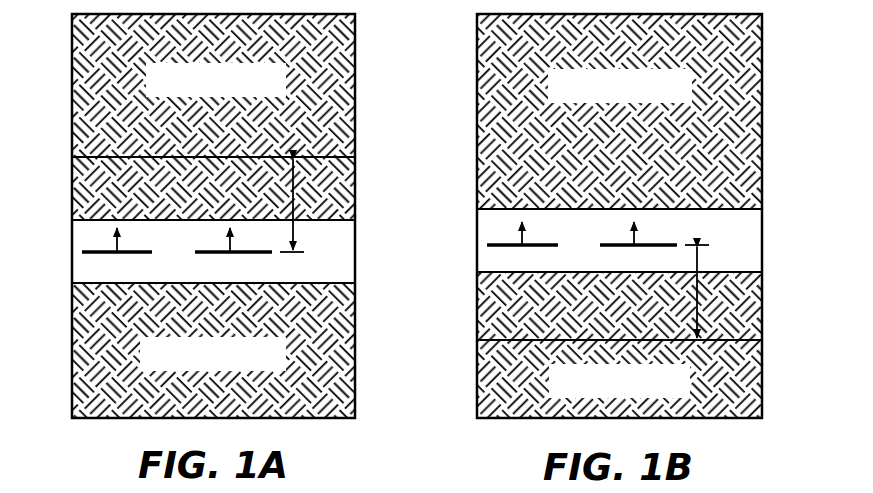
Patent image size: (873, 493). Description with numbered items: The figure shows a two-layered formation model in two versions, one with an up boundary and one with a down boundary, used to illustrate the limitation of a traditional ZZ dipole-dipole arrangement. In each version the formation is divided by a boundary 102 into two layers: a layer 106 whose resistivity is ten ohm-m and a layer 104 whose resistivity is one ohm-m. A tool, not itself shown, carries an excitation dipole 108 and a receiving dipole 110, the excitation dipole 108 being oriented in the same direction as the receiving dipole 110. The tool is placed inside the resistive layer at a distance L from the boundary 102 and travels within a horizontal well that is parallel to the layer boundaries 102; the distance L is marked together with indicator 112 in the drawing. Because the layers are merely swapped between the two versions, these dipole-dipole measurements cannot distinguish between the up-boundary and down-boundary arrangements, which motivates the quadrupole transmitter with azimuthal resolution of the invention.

In FIG. 1A, the boundary 102 is at (97, 175).
In FIG. 1B, the boundary 102 is at (747, 337).
In FIG. 1A, the layer 104 is at (97, 71).
In FIG. 1B, the layer 104 is at (735, 374).
In FIG. 1A, the layer 106 is at (97, 373).
In FIG. 1B, the layer 106 is at (745, 72).
In FIG. 1A, the excitation dipole 108 is at (84, 253).
In FIG. 1B, the excitation dipole 108 is at (489, 248).
In FIG. 1A, the receiving dipole 110 is at (196, 254).
In FIG. 1B, the receiving dipole 110 is at (606, 244).
In FIG. 1A, the bed boundary distance L 112 is at (293, 228).
In FIG. 1B, the bed boundary distance L 112 is at (697, 270).